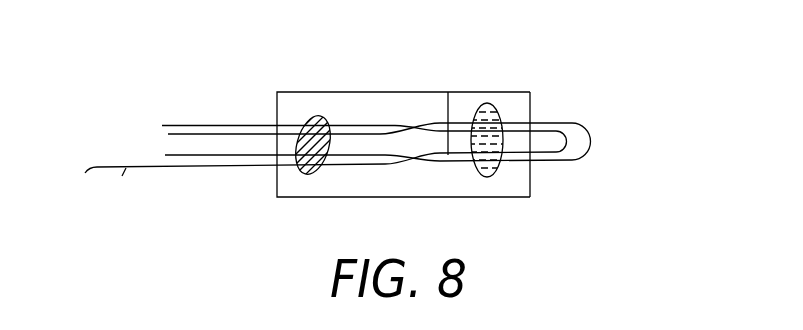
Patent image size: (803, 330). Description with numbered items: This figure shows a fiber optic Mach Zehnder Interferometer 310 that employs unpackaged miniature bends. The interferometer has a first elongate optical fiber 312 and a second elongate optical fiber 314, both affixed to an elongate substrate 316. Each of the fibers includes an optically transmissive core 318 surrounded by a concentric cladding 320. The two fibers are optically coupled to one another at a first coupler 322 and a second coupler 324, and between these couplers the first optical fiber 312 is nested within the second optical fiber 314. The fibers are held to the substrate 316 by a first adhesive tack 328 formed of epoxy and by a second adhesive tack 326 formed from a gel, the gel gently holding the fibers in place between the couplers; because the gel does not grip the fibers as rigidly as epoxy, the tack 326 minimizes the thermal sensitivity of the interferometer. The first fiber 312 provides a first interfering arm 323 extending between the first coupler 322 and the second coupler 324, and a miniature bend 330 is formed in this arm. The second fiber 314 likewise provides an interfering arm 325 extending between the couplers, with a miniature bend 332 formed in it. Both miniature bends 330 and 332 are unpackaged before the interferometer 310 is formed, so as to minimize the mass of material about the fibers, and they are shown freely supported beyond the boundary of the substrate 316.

The fiber optic Mach Zehnder Interferometer 310 is at (466, 27).
The first elongate optical fiber 312 is at (169, 134).
The second elongate optical fiber 314 is at (183, 124).
The elongate substrate 316 is at (330, 93).
The optically transmissive core 318 is at (70, 184).
The concentric cladding 320 is at (122, 176).
The first coupler 322 is at (380, 119).
The first interfering arm 323 is at (448, 100).
The second coupler 324 is at (418, 163).
The interfering arm 325 is at (523, 180).
The second adhesive tack 326 is at (483, 175).
The first adhesive tack 328 is at (308, 175).
The miniature bend 330 is at (568, 122).
The miniature bend 332 is at (592, 149).